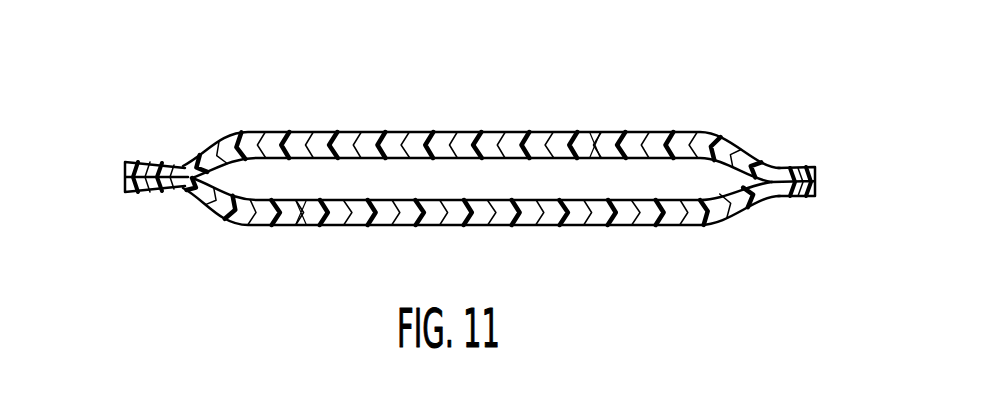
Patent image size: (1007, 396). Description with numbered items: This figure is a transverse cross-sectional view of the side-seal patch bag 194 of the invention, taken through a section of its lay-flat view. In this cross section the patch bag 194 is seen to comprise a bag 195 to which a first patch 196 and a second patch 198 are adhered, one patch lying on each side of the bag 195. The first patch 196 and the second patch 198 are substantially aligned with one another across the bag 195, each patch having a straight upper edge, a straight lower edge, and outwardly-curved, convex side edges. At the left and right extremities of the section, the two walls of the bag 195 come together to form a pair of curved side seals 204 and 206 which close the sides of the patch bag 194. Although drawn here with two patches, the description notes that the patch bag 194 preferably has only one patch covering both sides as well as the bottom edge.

The side-seal patch bag 194 is at (220, 115).
The bag 195 is at (605, 150).
The first patch 196 is at (433, 137).
The second patch 198 is at (440, 225).
The curved side seal 204 is at (781, 173).
The curved side seal 206 is at (170, 195).